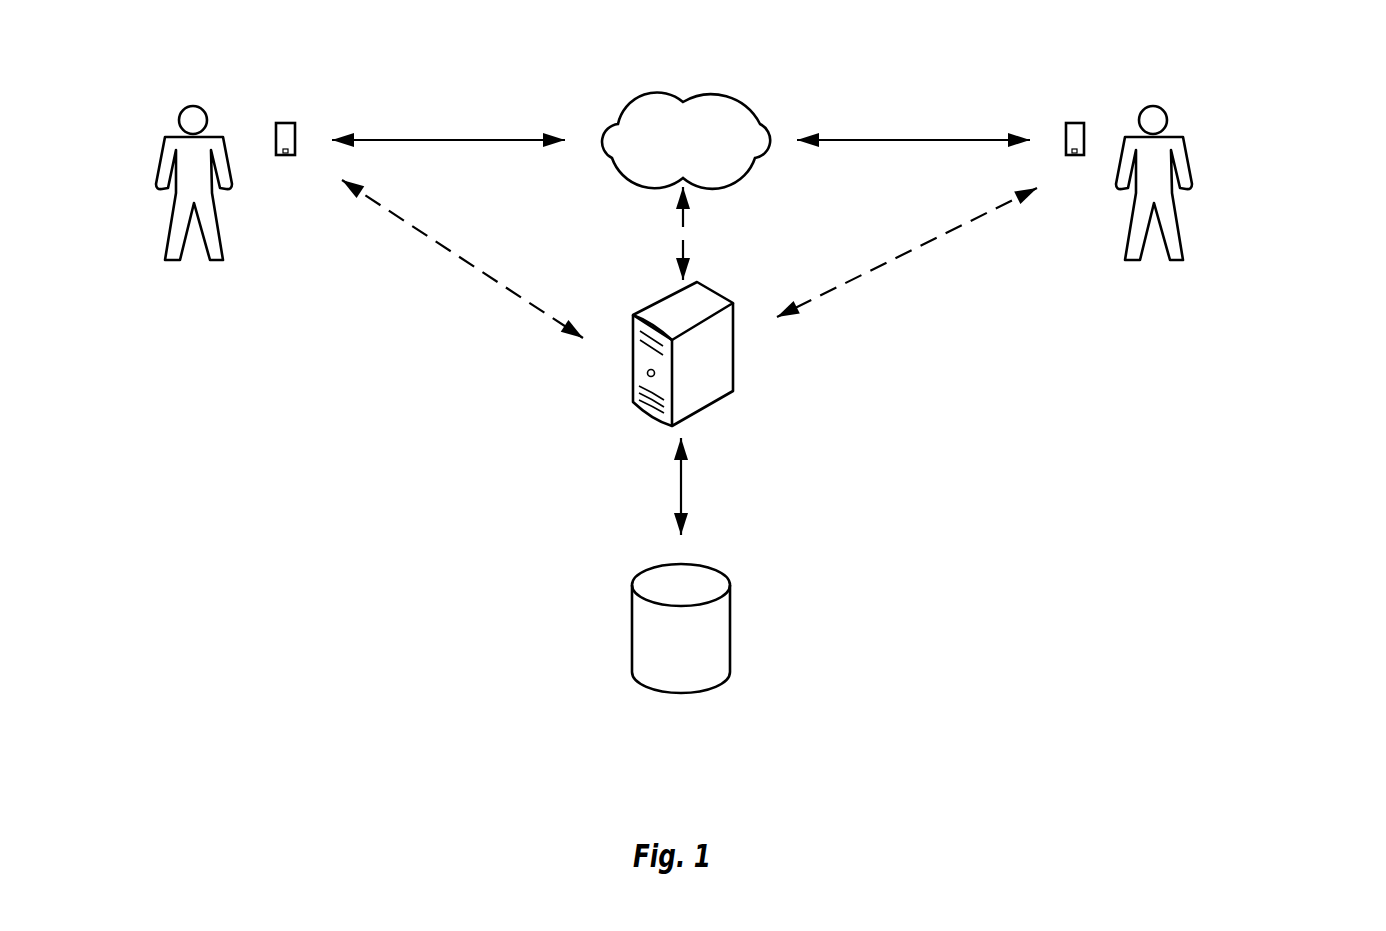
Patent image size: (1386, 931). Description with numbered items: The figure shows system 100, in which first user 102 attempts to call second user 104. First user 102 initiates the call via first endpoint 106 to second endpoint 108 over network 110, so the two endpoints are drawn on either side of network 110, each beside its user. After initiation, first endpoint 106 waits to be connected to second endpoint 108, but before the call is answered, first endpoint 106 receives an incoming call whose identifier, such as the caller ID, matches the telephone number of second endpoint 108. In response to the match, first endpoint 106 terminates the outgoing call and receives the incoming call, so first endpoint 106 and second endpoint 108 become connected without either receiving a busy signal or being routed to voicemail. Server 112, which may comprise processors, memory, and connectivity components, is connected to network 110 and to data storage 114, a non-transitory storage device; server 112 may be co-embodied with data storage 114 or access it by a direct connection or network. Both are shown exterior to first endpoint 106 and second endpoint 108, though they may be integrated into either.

The system 100 is at (1300, 70).
The first user 102 is at (168, 135).
The second user 104 is at (1183, 137).
The first endpoint 106 is at (295, 123).
The second endpoint 108 is at (1084, 123).
The network 110 is at (708, 95).
The server 112 is at (707, 292).
The data storage 114 is at (713, 568).